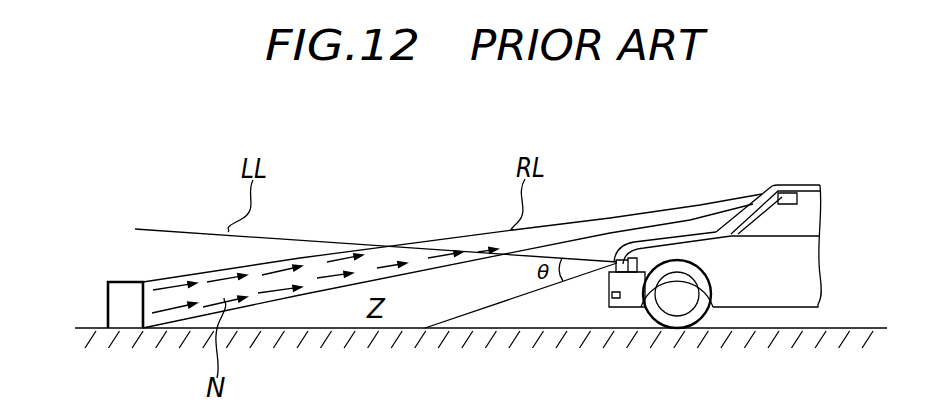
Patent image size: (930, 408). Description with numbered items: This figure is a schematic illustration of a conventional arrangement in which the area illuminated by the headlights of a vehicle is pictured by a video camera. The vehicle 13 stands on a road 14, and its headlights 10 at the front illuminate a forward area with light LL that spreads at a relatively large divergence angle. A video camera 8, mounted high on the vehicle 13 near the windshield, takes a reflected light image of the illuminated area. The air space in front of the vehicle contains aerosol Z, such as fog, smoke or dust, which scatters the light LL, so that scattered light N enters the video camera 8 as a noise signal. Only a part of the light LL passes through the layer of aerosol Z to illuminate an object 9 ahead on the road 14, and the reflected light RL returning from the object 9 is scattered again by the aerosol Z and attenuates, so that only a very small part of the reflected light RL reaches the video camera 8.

The video camera 8 is at (790, 193).
The object 9 is at (122, 298).
The headlights 10 is at (628, 262).
The vehicle 13 is at (797, 258).
The road 14 is at (822, 328).